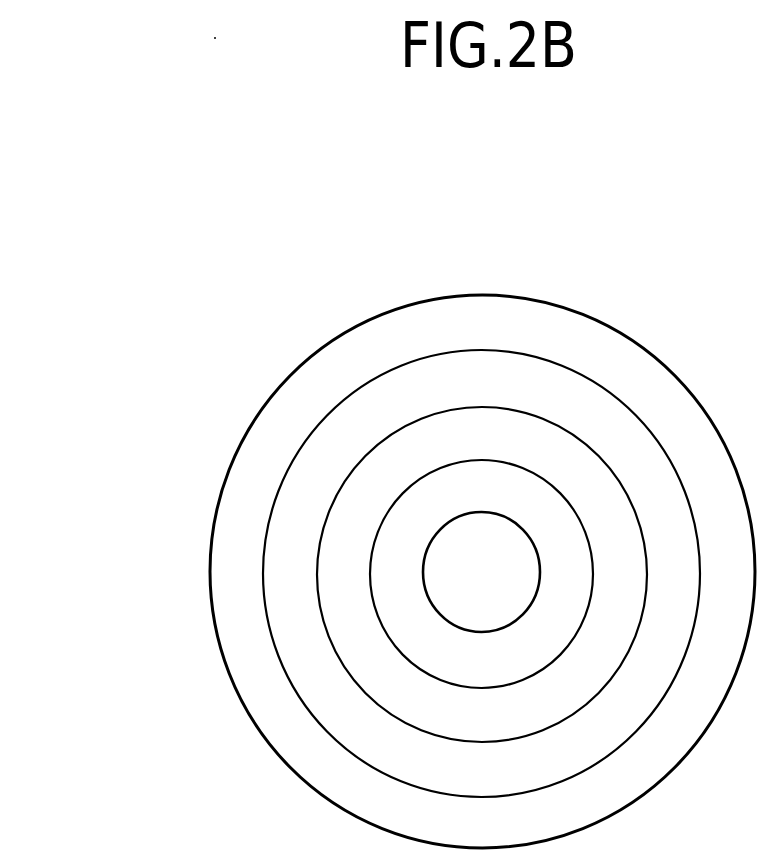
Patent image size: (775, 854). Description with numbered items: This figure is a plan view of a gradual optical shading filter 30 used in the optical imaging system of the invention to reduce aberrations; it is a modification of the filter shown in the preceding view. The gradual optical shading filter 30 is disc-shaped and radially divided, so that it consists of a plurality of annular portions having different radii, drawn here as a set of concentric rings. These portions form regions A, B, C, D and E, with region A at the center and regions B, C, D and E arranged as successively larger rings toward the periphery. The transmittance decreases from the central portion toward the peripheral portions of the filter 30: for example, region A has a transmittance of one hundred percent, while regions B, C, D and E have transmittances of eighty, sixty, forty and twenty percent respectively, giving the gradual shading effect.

The gradual optical shading filter 30 is at (391, 571).
The region A is at (481, 572).
The region B is at (481, 574).
The region C is at (482, 574).
The region D is at (481, 573).
The region E is at (482, 571).